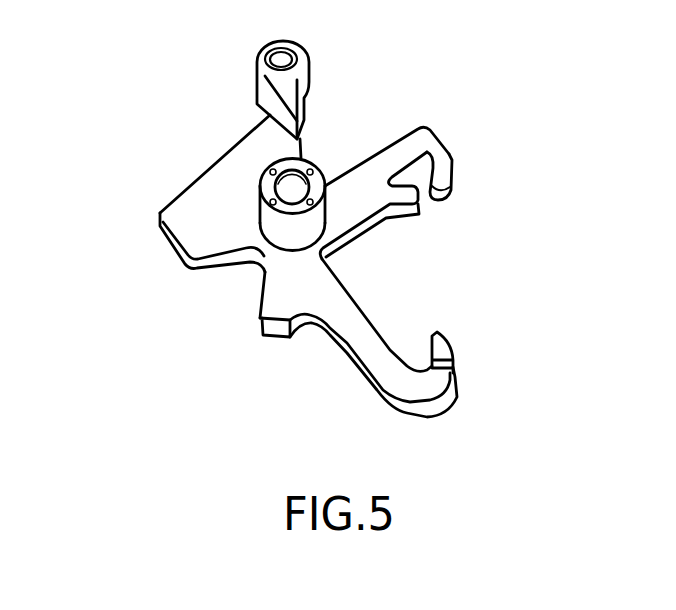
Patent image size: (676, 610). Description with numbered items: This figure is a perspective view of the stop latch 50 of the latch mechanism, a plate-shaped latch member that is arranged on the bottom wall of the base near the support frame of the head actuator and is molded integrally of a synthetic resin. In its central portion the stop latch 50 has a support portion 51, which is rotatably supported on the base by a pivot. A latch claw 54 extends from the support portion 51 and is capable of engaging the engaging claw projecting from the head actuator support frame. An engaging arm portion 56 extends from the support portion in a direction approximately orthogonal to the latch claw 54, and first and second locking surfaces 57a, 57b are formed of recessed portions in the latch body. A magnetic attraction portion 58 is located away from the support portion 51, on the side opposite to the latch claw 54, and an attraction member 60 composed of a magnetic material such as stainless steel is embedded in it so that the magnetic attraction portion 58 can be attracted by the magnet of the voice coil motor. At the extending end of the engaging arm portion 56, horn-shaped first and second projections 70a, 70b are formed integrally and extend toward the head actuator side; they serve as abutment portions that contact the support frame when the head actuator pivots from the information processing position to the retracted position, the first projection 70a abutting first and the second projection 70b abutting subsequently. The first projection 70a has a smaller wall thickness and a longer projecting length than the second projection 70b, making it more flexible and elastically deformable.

The stop latch 50 is at (193, 199).
The support portion 51 is at (305, 159).
The latch claw 54 is at (413, 388).
The engaging arm portion 56 is at (387, 152).
The first locking surface 57a is at (258, 308).
The second locking surface 57b is at (208, 266).
The magnetic attraction portion 58 is at (263, 90).
The attraction member 60 is at (288, 59).
The first projection 70a is at (451, 188).
The second projection 70b is at (408, 213).